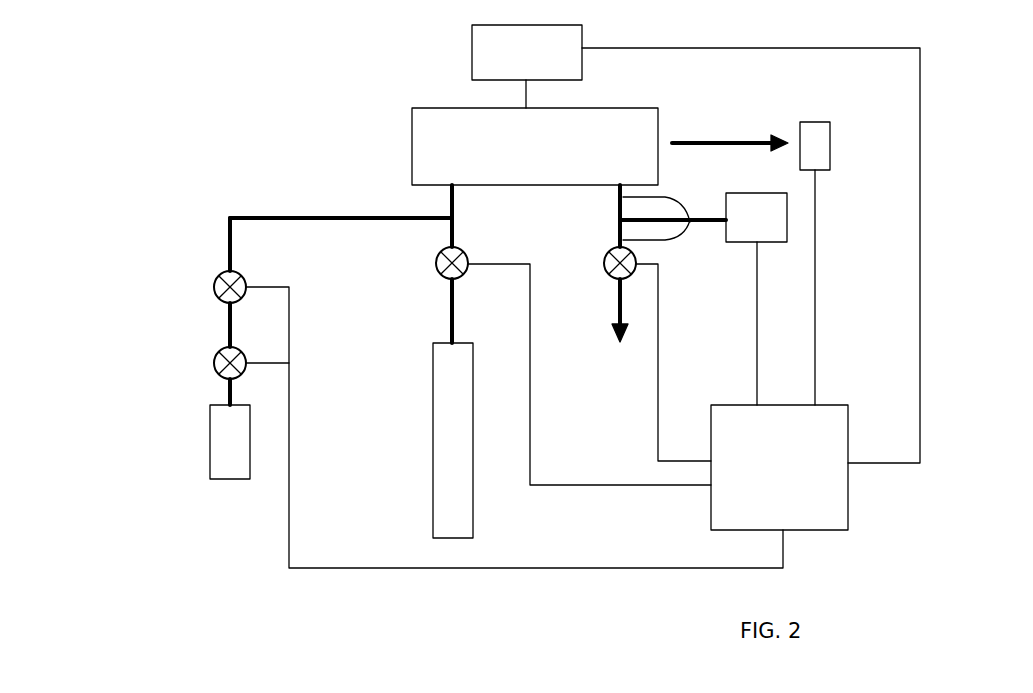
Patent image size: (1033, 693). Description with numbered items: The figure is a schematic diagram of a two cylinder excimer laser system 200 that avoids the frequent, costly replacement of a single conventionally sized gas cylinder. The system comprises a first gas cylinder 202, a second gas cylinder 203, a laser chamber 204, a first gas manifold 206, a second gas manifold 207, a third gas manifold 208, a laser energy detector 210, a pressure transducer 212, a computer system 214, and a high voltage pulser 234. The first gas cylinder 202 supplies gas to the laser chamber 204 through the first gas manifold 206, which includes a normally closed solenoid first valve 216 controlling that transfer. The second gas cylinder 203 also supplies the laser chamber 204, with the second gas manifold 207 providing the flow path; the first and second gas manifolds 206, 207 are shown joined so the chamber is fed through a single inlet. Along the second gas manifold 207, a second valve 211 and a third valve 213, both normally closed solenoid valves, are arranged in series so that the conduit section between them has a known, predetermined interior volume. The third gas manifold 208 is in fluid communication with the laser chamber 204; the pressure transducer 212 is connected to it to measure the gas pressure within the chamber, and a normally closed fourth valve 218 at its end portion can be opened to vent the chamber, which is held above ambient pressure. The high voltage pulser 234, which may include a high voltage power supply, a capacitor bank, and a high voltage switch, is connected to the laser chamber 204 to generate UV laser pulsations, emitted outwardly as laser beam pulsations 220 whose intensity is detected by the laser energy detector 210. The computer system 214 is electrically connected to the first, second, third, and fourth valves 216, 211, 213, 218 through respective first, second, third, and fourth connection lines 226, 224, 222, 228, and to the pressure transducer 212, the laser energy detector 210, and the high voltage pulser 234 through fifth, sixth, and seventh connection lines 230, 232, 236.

The two cylinder excimer laser system 200 is at (232, 149).
The first gas cylinder 202 is at (442, 460).
The second gas cylinder 203 is at (222, 458).
The laser chamber 204 is at (420, 158).
The first gas manifold 206 is at (448, 232).
The second gas manifold 207 is at (227, 395).
The third gas manifold 208 is at (680, 230).
The laser energy detector 210 is at (818, 148).
The second valve 211 is at (212, 370).
The pressure transducer 212 is at (750, 230).
The third valve 213 is at (210, 285).
The computer system 214 is at (828, 447).
The first valve 216 is at (462, 252).
The fourth valve 218 is at (580, 233).
The laser beam pulsations 220 is at (727, 140).
The third connection line 222 is at (265, 285).
The second connection line 224 is at (267, 363).
The first connection line 226 is at (532, 412).
The fourth connection line 228 is at (660, 350).
The fifth connection line 230 is at (782, 323).
The sixth connection line 232 is at (818, 250).
The high voltage pulser 234 is at (490, 50).
The seventh connection line 236 is at (793, 48).